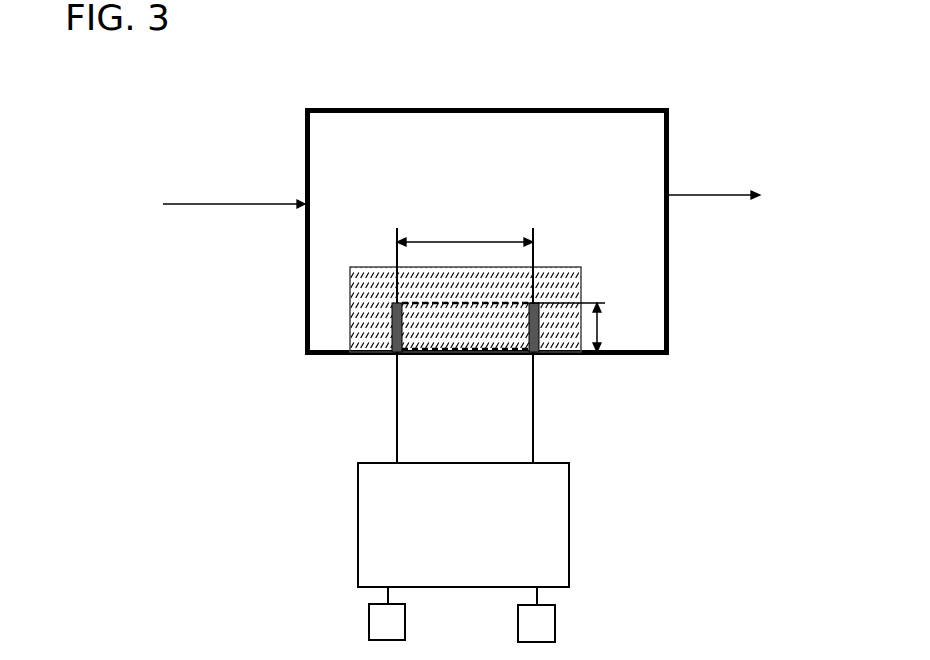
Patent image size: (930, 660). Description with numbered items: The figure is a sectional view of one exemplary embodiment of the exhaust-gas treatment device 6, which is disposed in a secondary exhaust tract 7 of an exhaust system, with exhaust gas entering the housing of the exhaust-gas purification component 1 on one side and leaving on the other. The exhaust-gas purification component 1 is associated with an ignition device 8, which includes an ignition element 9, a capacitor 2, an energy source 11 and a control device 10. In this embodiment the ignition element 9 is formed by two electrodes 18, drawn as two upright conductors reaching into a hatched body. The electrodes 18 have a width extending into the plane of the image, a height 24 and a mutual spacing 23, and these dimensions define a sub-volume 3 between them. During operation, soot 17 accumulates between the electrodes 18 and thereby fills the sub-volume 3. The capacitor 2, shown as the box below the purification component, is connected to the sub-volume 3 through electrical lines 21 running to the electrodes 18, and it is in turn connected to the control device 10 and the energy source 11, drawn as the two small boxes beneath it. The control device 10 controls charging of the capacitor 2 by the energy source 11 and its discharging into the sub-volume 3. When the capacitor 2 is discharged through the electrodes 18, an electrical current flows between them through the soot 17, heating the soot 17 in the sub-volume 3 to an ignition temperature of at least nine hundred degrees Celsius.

The exhaust-gas purification component 1 is at (669, 248).
The capacitor 2 is at (569, 533).
The sub-volume 3 is at (445, 355).
The exhaust-gas treatment device 6 is at (224, 122).
The secondary exhaust tract 7 is at (225, 202).
The ignition device 8 is at (695, 530).
The ignition element 9 is at (545, 352).
The control device 10 is at (407, 628).
The energy source 11 is at (555, 630).
The soot 17 is at (358, 307).
The electrodes 18 is at (385, 353).
The electrical lines 21 is at (532, 443).
The mutual spacing 23 is at (442, 235).
The height 24 is at (600, 333).